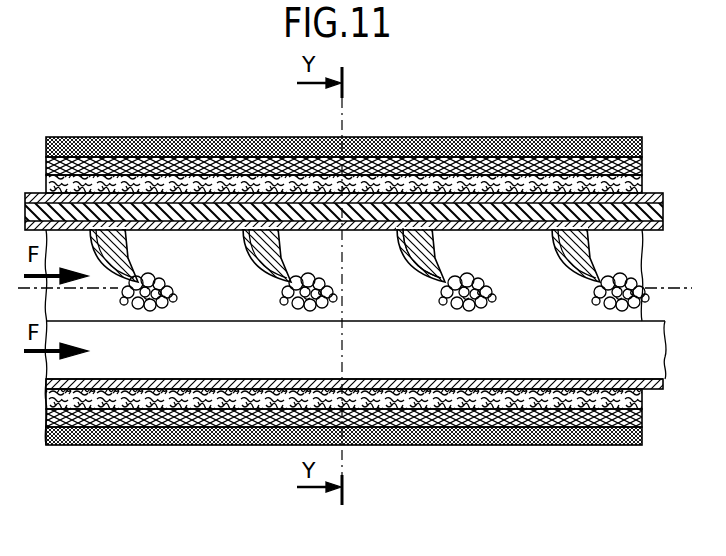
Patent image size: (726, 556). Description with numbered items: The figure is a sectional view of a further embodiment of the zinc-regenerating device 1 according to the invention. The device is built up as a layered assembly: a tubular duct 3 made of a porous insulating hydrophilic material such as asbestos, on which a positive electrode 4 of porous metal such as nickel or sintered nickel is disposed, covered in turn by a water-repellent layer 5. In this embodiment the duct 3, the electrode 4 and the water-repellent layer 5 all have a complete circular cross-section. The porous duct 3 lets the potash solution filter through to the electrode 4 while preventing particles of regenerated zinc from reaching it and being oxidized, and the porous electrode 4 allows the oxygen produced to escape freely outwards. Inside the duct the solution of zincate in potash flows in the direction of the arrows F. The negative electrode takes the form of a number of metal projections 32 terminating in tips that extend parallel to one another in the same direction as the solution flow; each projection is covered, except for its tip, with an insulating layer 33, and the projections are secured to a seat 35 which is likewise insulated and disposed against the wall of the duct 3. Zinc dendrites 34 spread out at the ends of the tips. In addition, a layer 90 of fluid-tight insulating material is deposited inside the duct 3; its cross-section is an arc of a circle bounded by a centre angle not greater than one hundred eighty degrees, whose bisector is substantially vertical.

The zinc-regenerating device 1 is at (344, 149).
The tubular duct 3 is at (118, 172).
The positive electrode 4 is at (173, 157).
The water-repellent layer 5 is at (232, 137).
The seat 35 is at (375, 210).
The insulating layer 33 is at (405, 240).
The metal projections 32 is at (424, 262).
The zinc dendrites 34 is at (482, 282).
The layer of fluid-tight insulating material 90 is at (527, 378).